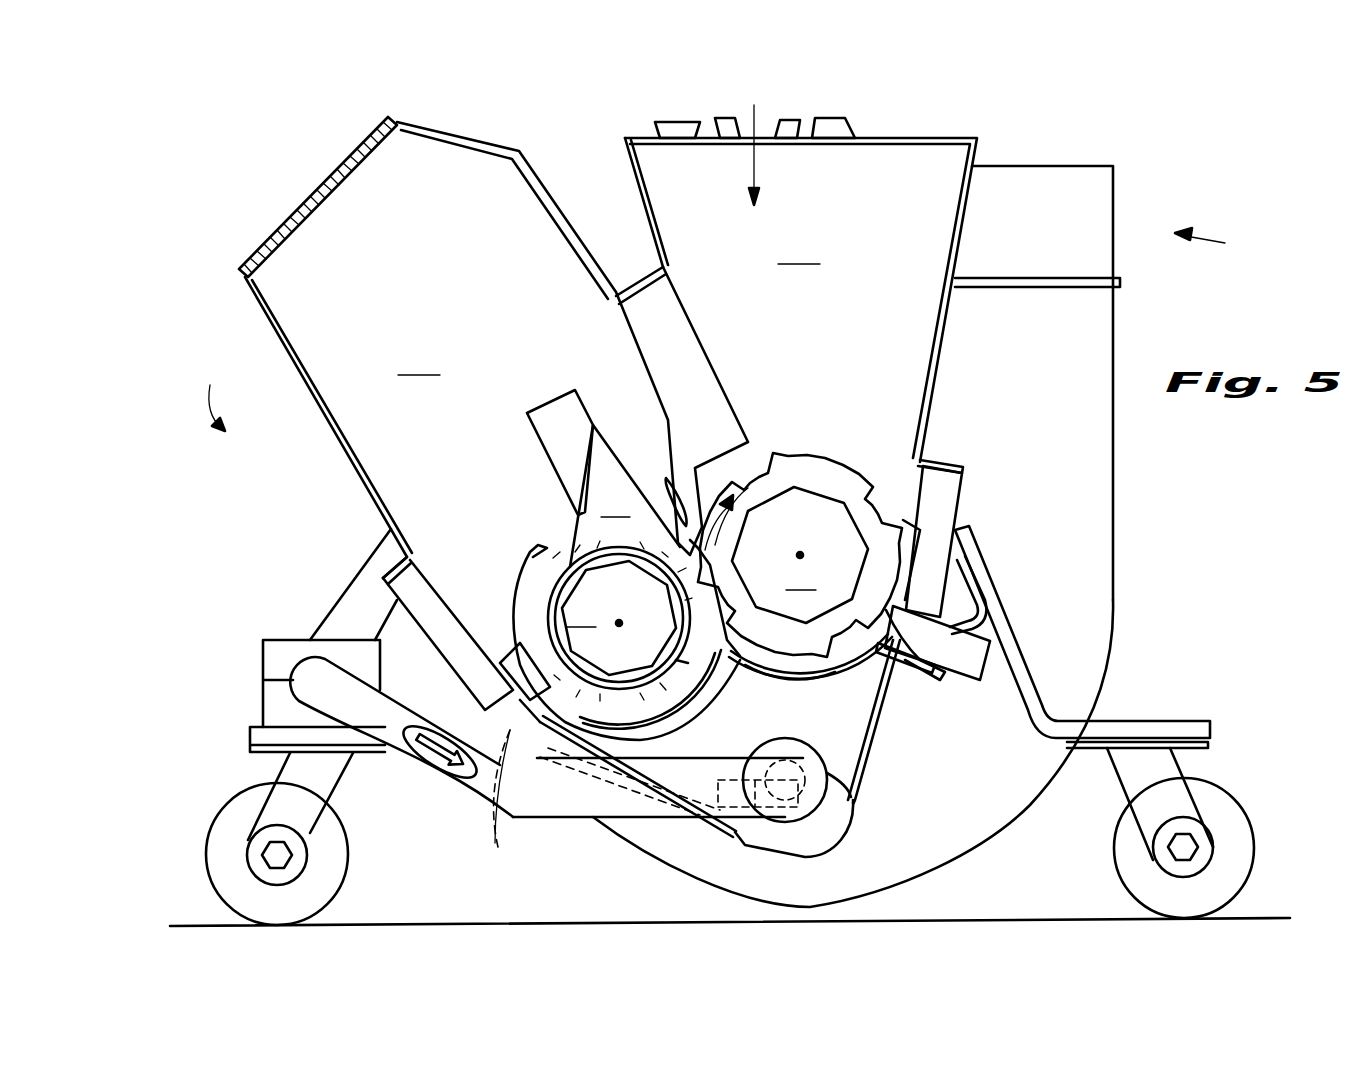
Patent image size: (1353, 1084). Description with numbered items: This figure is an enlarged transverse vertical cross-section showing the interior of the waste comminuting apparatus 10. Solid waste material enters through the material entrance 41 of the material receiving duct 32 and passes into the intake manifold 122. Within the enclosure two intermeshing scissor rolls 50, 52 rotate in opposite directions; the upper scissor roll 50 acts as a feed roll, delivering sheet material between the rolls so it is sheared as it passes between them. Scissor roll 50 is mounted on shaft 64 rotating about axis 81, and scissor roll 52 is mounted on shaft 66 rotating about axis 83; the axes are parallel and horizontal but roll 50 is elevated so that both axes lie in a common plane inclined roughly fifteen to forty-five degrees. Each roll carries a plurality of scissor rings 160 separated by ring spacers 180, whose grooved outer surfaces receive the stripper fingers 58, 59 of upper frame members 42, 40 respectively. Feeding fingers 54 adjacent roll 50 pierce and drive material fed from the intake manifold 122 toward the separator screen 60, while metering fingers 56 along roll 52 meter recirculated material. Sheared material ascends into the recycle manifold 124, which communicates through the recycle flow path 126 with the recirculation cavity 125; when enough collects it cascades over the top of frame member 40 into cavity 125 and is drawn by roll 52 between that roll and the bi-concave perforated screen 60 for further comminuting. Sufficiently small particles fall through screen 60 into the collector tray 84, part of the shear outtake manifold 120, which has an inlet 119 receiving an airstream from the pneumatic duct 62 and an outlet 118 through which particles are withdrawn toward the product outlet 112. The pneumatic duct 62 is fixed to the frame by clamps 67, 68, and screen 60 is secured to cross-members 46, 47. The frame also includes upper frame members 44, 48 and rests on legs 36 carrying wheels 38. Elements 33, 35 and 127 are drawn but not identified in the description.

The waste comminuting apparatus 10 is at (211, 391).
The material receiving duct 32 is at (1216, 242).
The chipper hopper 33 is at (455, 344).
The hopper lid 35 is at (307, 200).
The legs 36 is at (255, 727).
The wheels 38 is at (348, 870).
The upper frame member 40 is at (560, 447).
The material entrance 41 is at (754, 138).
The upper frame member 42 is at (675, 332).
The upper frame member 44 is at (947, 498).
The cross-member 46 is at (945, 682).
The cross-member 47 is at (495, 843).
The upper frame member 48 is at (397, 587).
The scissor roll 50 is at (862, 455).
The scissor roll 52 is at (507, 563).
The feeding fingers 54 is at (933, 455).
The metering fingers 56 is at (508, 663).
The stripper finger 58 is at (625, 496).
The stripper finger 59 is at (747, 460).
The separator screen 60 is at (758, 672).
The pneumatic duct 62 is at (607, 803).
The shaft 64 is at (800, 555).
The shaft 66 is at (620, 621).
The clamp 67 is at (343, 673).
The clamp 68 is at (280, 640).
The axis 81 is at (802, 553).
The axis 83 is at (618, 621).
The collector tray 84 is at (810, 858).
The product outlet 112 is at (1053, 165).
The outlet 118 is at (807, 753).
The inlet 119 is at (798, 758).
The shear outtake manifold 120 is at (853, 690).
The intake manifold 122 is at (801, 290).
The recycle manifold 124 is at (618, 402).
The recirculation cavity 125 is at (419, 363).
The recycle flow path 126 is at (505, 422).
The anvil 127 is at (677, 522).
The scissor rings 160 is at (800, 468).
The ring spacers 180 is at (672, 660).